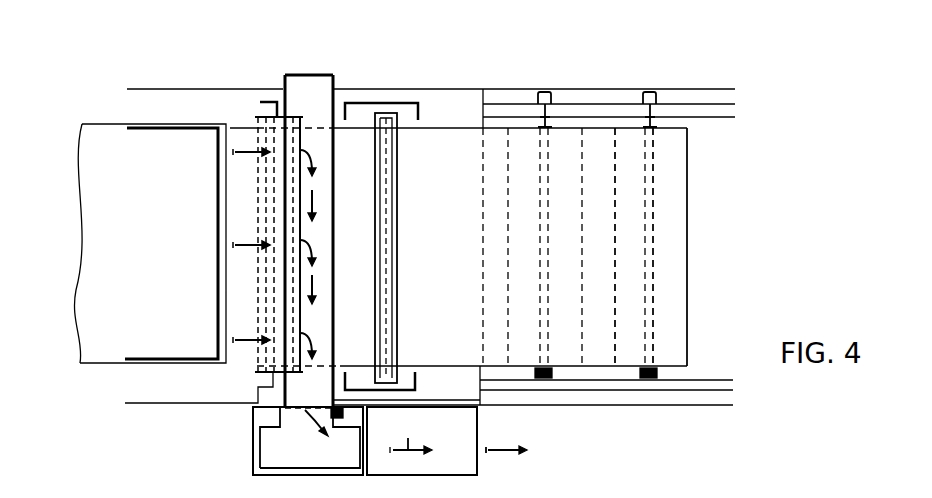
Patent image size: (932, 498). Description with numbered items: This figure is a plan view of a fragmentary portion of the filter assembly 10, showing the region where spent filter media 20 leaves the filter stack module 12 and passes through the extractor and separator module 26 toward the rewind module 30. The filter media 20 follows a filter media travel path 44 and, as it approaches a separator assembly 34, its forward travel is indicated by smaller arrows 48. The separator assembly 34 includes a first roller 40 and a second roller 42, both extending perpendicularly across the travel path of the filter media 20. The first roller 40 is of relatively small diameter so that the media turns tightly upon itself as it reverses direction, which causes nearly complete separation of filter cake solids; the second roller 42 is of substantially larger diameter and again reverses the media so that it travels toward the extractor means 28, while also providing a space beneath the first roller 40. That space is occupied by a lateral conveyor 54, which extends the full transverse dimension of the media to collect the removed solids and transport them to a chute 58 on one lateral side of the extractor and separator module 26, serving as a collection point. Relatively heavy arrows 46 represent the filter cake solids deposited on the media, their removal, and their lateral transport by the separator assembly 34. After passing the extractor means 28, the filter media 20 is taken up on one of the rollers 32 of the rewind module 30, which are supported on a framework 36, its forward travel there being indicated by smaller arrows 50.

The filter assembly 10 is at (825, 144).
The vertical filter stack module 12 is at (108, 100).
The filter media 20 is at (237, 124).
The extractor and separator module 26 is at (385, 78).
The extractor means 28 is at (397, 372).
The rewind module 30 is at (680, 82).
The rollers 32 is at (630, 360).
The separator assemblies 34 is at (267, 93).
The framework 36 is at (735, 110).
The first roller 40 is at (318, 395).
The second roller 42 is at (255, 363).
The filter media travel path 44 is at (456, 125).
The heavy arrows 46 is at (217, 130).
The smaller arrows 48 is at (123, 193).
The smaller arrows 50 is at (630, 198).
The lateral conveyor 54 is at (309, 76).
The chute 58 is at (253, 462).